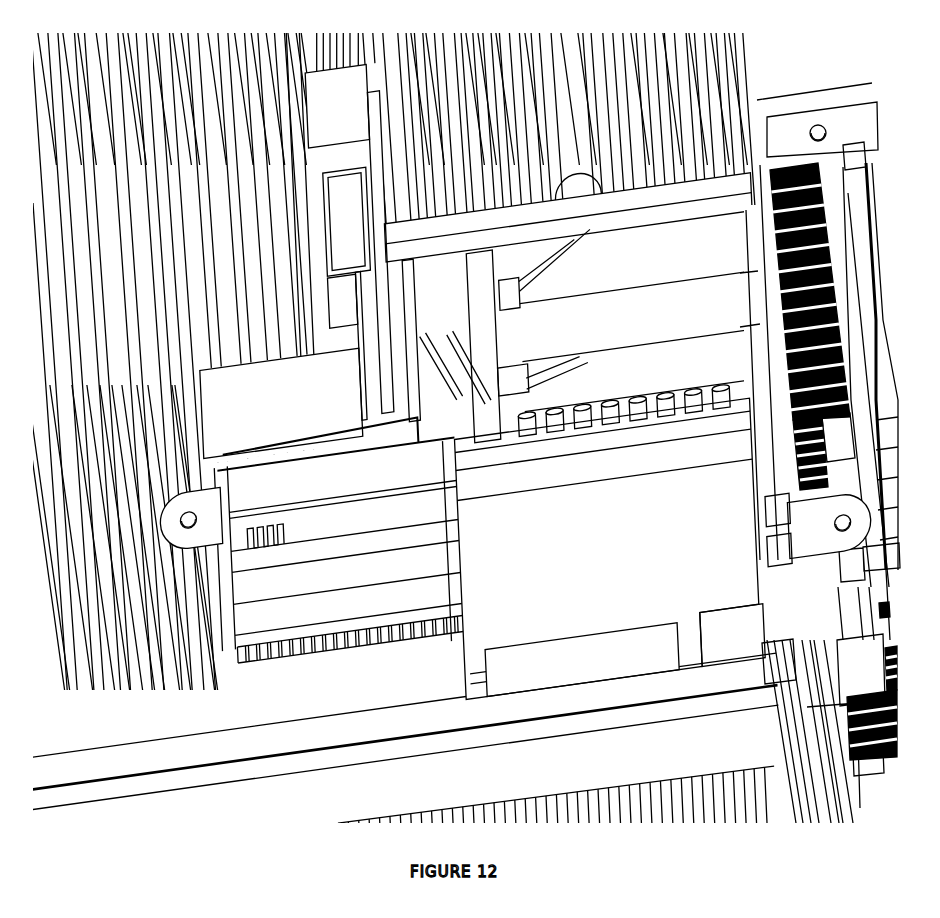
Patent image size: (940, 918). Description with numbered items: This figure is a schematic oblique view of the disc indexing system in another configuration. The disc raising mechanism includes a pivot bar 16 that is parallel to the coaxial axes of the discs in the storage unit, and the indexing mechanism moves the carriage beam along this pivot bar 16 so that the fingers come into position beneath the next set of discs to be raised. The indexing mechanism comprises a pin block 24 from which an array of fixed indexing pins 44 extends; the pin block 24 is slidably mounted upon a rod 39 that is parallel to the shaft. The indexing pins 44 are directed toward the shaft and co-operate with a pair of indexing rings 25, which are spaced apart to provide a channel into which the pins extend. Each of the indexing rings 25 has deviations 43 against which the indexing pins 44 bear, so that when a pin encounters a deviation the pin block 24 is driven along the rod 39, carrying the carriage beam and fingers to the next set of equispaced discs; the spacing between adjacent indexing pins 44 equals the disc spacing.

The pivot bar 16 is at (404, 785).
The pin block 24 is at (604, 550).
The indexing rings 25 is at (462, 290).
The rod 39 is at (358, 575).
The deviations 43 is at (447, 357).
The indexing pins 44 is at (612, 400).